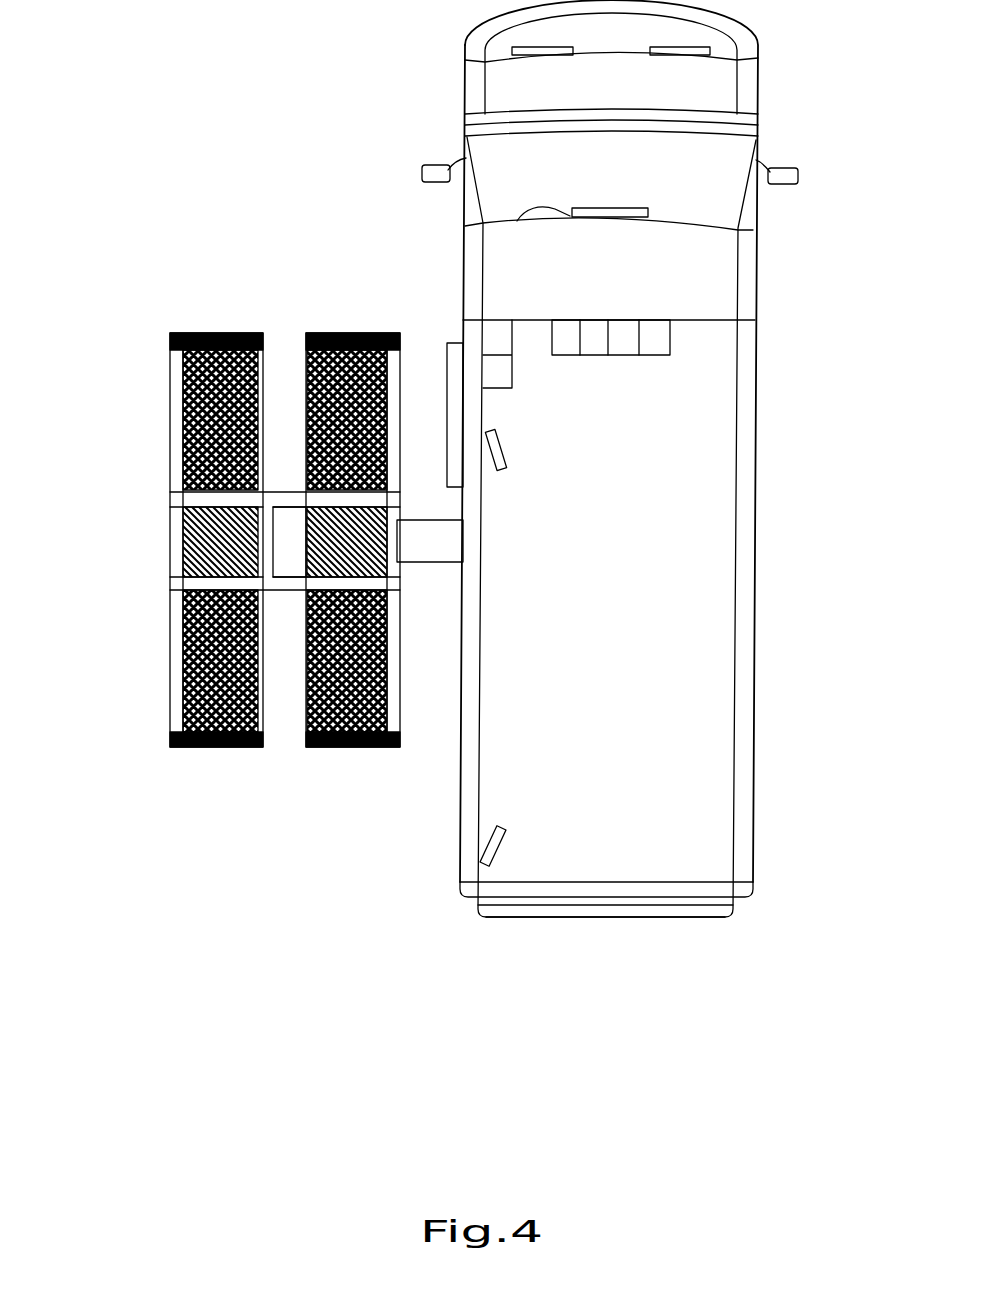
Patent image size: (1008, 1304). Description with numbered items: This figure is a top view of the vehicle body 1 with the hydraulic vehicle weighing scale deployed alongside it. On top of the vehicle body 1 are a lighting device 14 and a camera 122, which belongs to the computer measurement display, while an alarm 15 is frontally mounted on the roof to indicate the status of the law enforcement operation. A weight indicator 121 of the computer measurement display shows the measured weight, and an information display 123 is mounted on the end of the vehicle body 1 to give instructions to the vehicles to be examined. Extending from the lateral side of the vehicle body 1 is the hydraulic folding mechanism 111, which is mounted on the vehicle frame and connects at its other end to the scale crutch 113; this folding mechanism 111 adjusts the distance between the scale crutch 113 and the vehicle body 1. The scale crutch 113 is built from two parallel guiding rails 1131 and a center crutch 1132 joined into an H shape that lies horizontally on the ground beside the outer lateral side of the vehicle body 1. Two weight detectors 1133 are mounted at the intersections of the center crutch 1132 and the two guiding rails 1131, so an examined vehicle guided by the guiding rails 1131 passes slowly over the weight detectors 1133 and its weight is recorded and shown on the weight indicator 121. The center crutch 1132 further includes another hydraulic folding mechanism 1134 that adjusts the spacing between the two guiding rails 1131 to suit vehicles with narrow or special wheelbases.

The vehicle body 1 is at (712, 102).
The lighting device 14 is at (495, 337).
The alarm 15 is at (625, 350).
The hydraulic folding mechanism 111 is at (423, 567).
The scale crutch 113 is at (158, 765).
The weight indicator 121 is at (452, 342).
The camera 122 is at (505, 455).
The information display 123 is at (613, 917).
The guiding rails 1131 is at (195, 388).
The center crutch 1132 is at (182, 650).
The weight detectors 1133 is at (320, 548).
The hydraulic folding mechanism 1134 is at (287, 553).